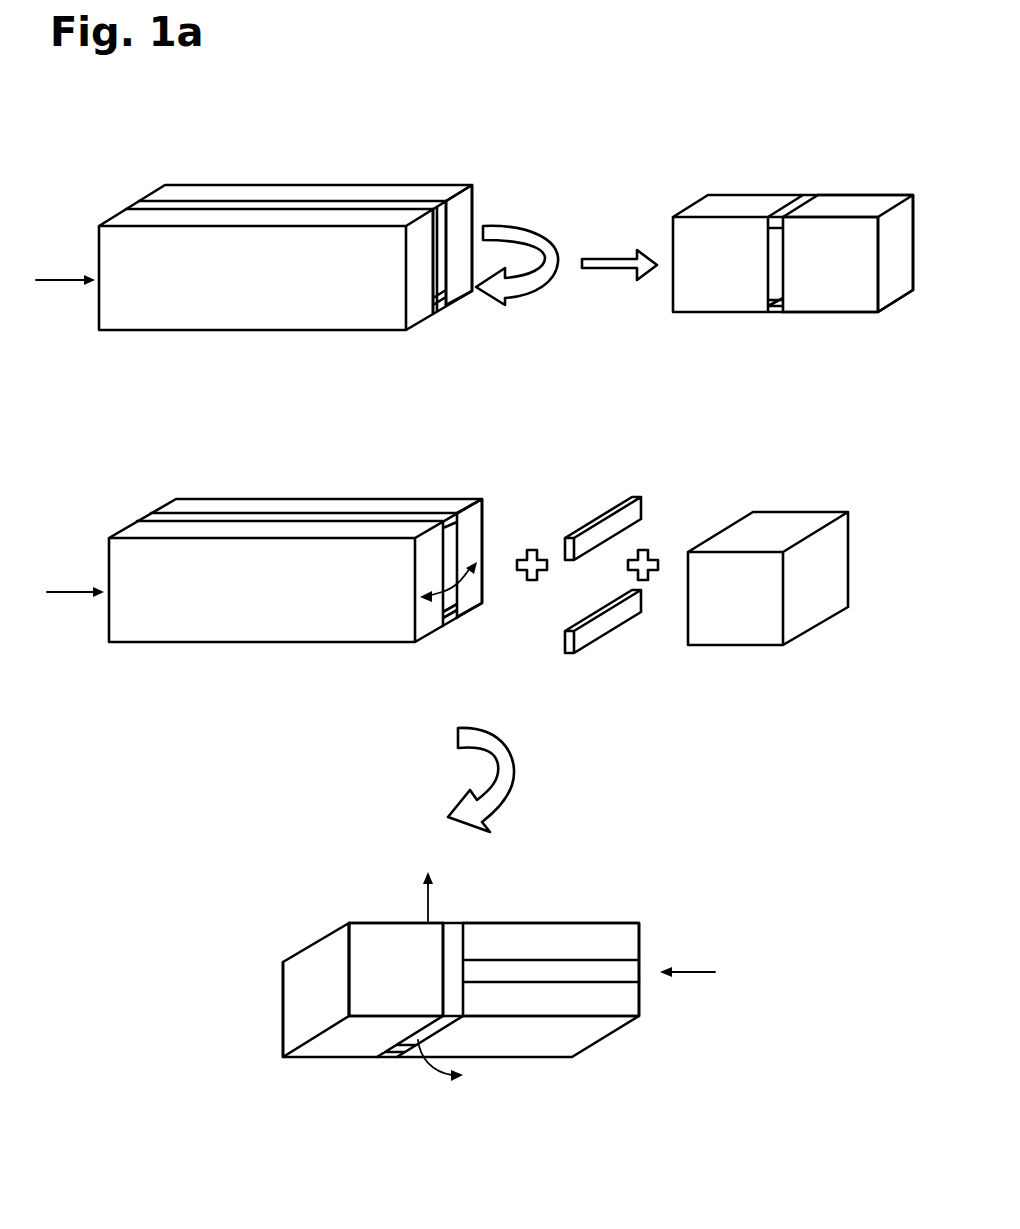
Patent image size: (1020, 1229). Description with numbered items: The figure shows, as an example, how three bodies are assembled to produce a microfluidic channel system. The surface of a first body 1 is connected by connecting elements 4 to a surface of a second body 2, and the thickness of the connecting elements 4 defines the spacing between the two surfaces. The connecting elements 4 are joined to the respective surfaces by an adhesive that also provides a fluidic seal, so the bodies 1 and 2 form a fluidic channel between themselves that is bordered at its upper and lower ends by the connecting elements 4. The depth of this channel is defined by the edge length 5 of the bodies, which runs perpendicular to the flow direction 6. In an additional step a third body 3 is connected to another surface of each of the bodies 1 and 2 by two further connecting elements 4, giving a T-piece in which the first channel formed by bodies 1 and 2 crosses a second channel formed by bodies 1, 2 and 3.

The body 1 is at (352, 322).
The body 2 is at (344, 192).
The third body 3 is at (845, 565).
The connecting elements 4 is at (260, 202).
The edge length 5 is at (447, 221).
The flow direction 6 is at (56, 280).